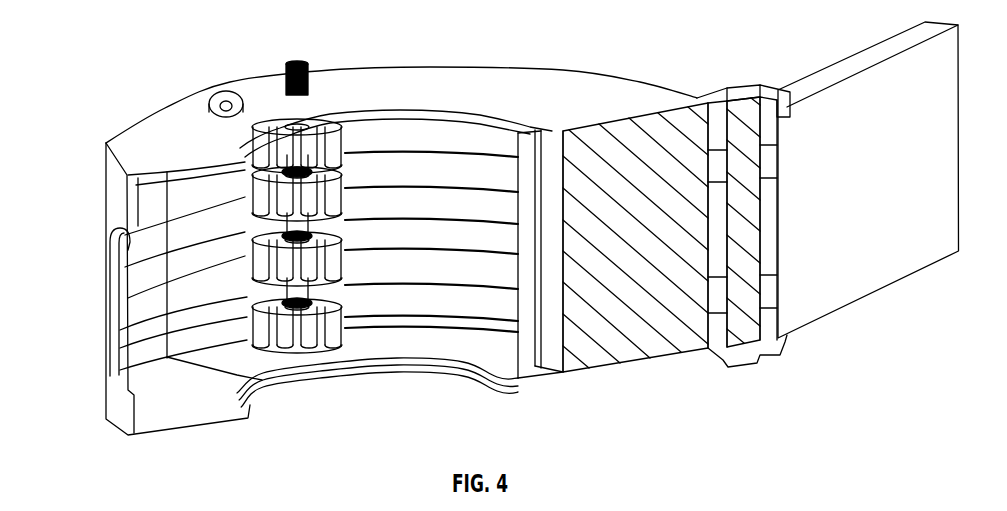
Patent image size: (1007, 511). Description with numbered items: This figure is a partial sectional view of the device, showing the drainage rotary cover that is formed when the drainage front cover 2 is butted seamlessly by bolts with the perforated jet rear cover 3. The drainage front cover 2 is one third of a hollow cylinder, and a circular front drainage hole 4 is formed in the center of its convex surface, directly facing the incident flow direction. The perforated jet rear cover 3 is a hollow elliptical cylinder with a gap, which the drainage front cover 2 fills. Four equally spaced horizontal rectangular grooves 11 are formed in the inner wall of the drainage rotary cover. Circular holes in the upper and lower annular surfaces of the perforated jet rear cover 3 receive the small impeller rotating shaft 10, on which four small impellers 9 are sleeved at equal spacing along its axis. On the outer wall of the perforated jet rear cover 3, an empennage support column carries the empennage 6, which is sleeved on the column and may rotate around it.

The drainage front cover 2 is at (175, 145).
The perforated jet rear cover 3 is at (533, 83).
The front drainage hole 4 is at (108, 281).
The empennage 6 is at (837, 285).
The small impeller 9 is at (317, 137).
The small impeller rotating shaft 10 is at (313, 303).
The horizontal rectangular groove 11 is at (430, 285).